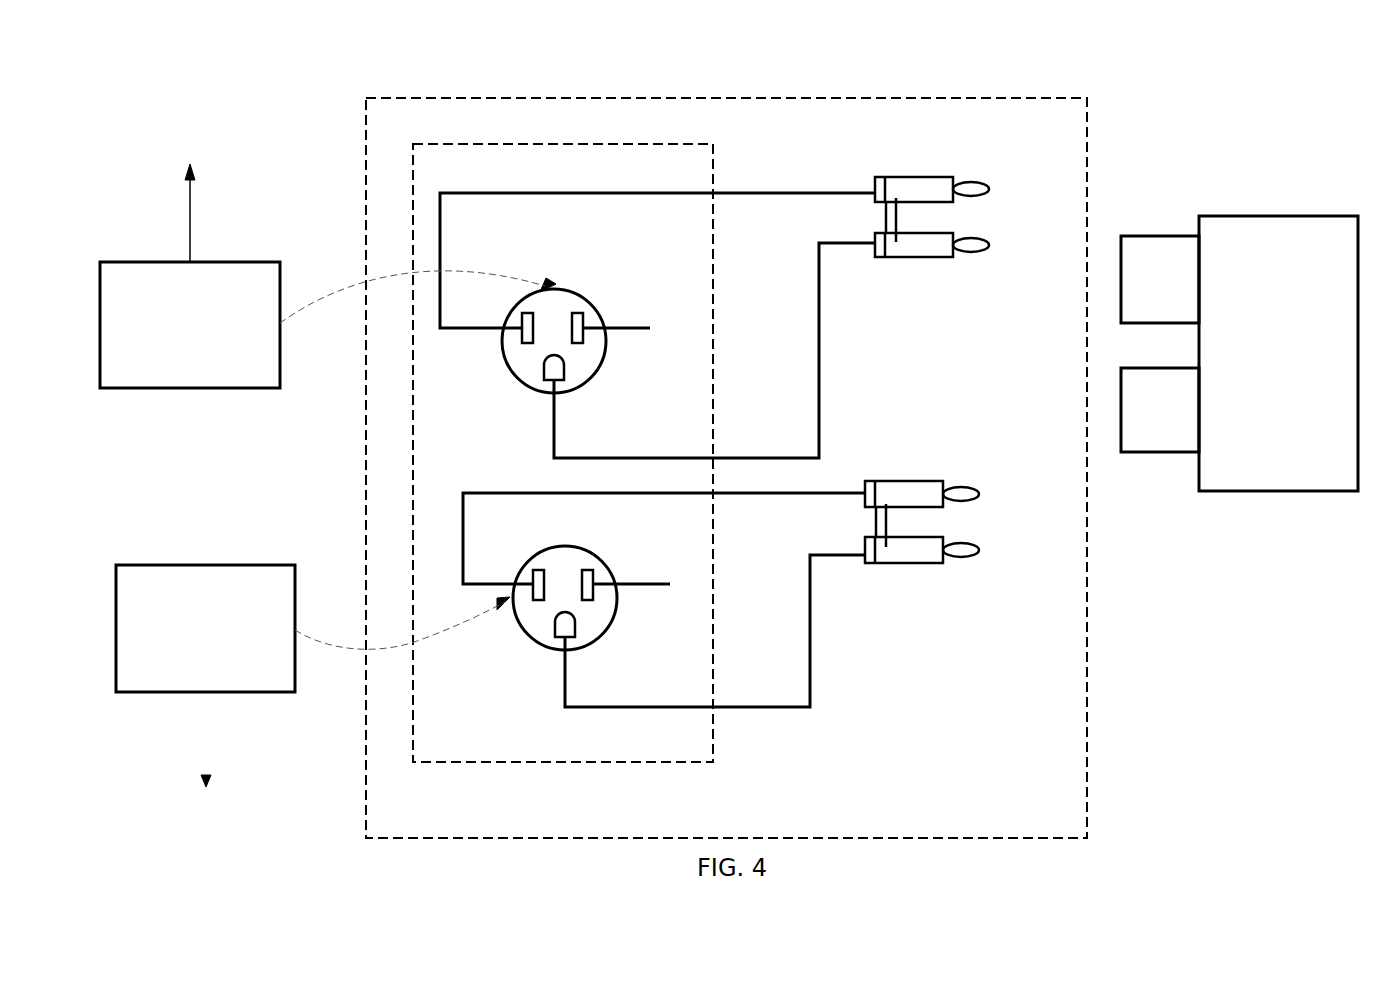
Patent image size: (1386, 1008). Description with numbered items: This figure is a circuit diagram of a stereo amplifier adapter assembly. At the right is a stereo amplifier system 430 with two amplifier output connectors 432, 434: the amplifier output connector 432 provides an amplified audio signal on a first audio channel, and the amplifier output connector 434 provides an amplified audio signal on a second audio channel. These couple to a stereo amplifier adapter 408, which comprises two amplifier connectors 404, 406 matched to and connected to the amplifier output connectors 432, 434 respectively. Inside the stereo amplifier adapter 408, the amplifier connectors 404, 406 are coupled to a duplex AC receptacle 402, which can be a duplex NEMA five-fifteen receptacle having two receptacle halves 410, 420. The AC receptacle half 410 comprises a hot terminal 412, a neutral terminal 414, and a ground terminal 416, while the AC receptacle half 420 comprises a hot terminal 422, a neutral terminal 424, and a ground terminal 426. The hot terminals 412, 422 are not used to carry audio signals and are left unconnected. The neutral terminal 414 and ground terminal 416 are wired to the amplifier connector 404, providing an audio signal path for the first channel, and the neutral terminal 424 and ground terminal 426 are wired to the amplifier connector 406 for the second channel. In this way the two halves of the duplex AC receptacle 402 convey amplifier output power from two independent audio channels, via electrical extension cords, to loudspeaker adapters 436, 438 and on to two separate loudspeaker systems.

The duplex AC receptacle 402 is at (628, 152).
The amplifier connector 404 is at (928, 186).
The amplifier connector 406 is at (920, 490).
The stereo amplifier adapter 408 is at (1027, 98).
The AC receptacle half 410 is at (520, 390).
The hot terminal 412 is at (587, 325).
The neutral terminal 414 is at (528, 343).
The ground terminal 416 is at (565, 363).
The AC receptacle half 420 is at (532, 640).
The hot terminal 422 is at (587, 578).
The neutral terminal 424 is at (532, 600).
The ground terminal 426 is at (575, 620).
The stereo amplifier system 430 is at (1300, 216).
The amplifier output connector 432 is at (1162, 236).
The amplifier output connector 434 is at (1172, 453).
The loudspeaker adapter 436 is at (250, 262).
The loudspeaker adapter 438 is at (236, 565).